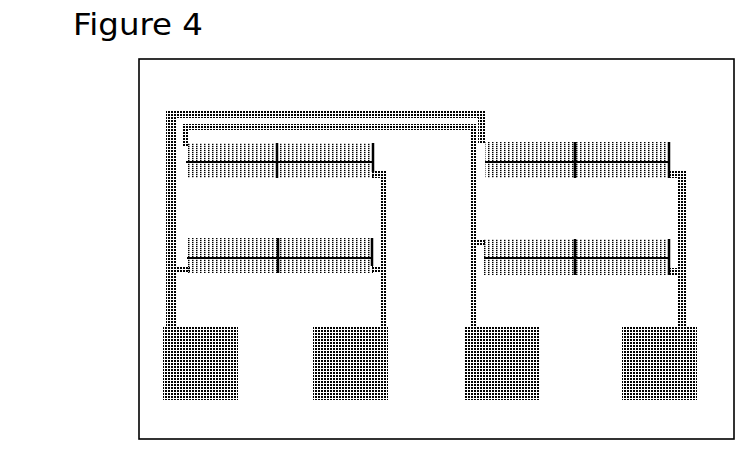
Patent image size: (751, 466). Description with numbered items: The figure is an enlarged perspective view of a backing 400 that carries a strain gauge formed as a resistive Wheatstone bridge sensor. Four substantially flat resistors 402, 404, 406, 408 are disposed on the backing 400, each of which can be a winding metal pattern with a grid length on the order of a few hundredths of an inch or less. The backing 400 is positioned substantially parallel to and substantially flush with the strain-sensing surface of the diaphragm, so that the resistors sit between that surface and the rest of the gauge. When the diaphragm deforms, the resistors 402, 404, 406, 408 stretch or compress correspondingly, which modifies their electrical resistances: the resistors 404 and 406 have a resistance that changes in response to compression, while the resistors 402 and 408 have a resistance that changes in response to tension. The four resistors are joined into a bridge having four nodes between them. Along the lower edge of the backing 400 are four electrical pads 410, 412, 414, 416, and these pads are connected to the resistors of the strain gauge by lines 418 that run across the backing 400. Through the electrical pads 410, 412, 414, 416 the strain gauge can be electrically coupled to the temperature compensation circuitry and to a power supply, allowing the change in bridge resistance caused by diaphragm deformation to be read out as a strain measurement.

The backing 400 is at (478, 59).
The resistor 402 is at (247, 238).
The resistor 404 is at (360, 148).
The resistor 406 is at (627, 150).
The resistor 408 is at (592, 241).
The electrical pad 410 is at (223, 343).
The electrical pad 412 is at (380, 365).
The electrical pad 414 is at (530, 356).
The electrical pad 416 is at (626, 368).
The lines 418 is at (383, 232).